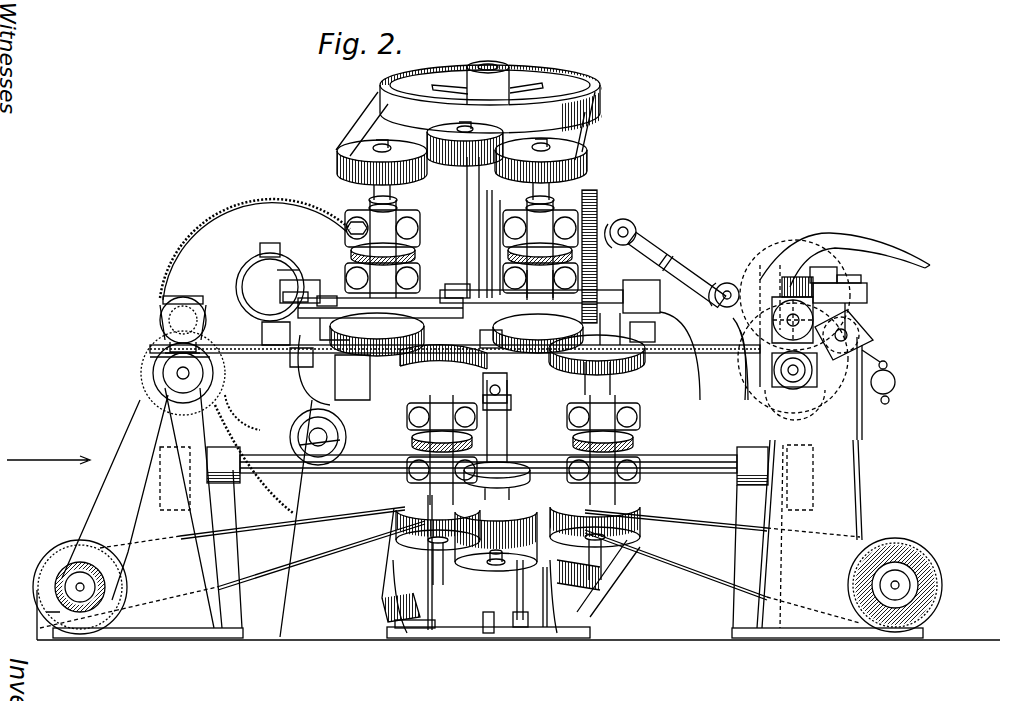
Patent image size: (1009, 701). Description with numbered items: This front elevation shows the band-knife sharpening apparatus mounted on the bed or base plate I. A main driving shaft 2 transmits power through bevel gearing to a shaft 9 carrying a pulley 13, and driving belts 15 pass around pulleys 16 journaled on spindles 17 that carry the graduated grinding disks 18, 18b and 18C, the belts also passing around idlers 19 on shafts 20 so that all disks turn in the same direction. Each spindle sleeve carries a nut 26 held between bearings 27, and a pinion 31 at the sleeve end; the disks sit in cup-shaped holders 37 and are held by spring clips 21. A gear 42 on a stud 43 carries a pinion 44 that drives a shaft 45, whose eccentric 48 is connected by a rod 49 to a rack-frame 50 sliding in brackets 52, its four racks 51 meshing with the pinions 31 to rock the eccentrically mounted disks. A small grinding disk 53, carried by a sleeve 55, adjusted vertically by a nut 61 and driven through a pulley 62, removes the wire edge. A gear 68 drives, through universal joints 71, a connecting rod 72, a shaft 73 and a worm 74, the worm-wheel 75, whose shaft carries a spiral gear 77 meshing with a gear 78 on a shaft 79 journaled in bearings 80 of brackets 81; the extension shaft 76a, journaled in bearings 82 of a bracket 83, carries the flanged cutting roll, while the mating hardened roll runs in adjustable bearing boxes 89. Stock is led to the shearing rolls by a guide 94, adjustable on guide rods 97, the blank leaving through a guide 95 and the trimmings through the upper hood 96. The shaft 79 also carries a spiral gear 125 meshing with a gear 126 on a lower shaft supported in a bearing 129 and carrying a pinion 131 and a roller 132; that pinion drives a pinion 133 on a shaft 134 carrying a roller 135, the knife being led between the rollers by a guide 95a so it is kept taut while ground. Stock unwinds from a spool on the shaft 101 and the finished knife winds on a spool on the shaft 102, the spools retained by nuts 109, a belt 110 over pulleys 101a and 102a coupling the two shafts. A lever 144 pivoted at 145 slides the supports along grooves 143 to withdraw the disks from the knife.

The shaft 9 is at (490, 66).
The pulley 13 is at (556, 90).
The driving belts 15 is at (366, 114).
The pulleys 16 is at (410, 147).
The spindles 17 is at (346, 140).
The idlers 19 is at (459, 128).
The shafts 20 is at (514, 125).
The bearings 27 is at (492, 350).
The nut 26 is at (414, 251).
The main driving shaft 2 is at (540, 285).
The gear 68 is at (597, 189).
The universal joints 71 is at (623, 219).
The connecting rod 72 is at (677, 270).
The grinding disk holder 37 is at (460, 306).
The rack-frame 50 is at (447, 286).
The racks 51 is at (351, 332).
The small grinding disk 53 is at (470, 350).
The brackets 52 is at (448, 354).
The eccentric 48 is at (282, 276).
The rod 49 is at (333, 296).
The shaft 45 is at (262, 322).
The grinding disk 18 is at (380, 345).
The grinding or polishing disk 18C is at (646, 325).
The grinding disk 18b is at (505, 345).
The pinion 31 is at (592, 290).
The spring clips 21 is at (541, 342).
The nut 61 is at (482, 383).
The sleeve 55 is at (497, 421).
The pulley 62 is at (510, 468).
The stud 43 is at (331, 447).
The shaft 134 is at (186, 318).
The bearing 129 is at (162, 305).
The roller 135 is at (160, 332).
The pinion 133 is at (160, 348).
The roller 132 is at (168, 357).
The spiral gear 126 is at (153, 373).
The pinion 131 is at (150, 412).
The pinion 44 is at (300, 430).
The gear 42 is at (254, 459).
The guide 95a is at (296, 345).
The brackets 81 is at (513, 512).
The bearings 80 is at (487, 466).
The shaft 79 is at (700, 473).
The spiral gear wheel 125 is at (175, 510).
The gear 78 is at (795, 482).
The adjustable bearing boxes 89 is at (782, 302).
The worm 74 is at (793, 280).
The shaft 73 is at (867, 295).
The upper guiding hood 96 is at (802, 236).
The worm-wheel 75 is at (745, 340).
The guide 95 is at (704, 356).
The extension shaft 76a is at (844, 350).
The spiral gear 77 is at (782, 370).
The bearings 82 is at (800, 371).
The bracket 83 is at (802, 407).
The guide rods 97 is at (886, 404).
The guide 94 is at (887, 365).
The belt 110 is at (318, 522).
The shaft 102 is at (95, 586).
The nuts 109 is at (60, 570).
The pulley 102a is at (50, 604).
The shaft 101 is at (910, 583).
The pulley 101a is at (940, 595).
The bed or base plate I is at (518, 577).
The pivot 145 is at (524, 637).
The lever 144 is at (578, 637).
The guiding grooves 143 is at (405, 637).